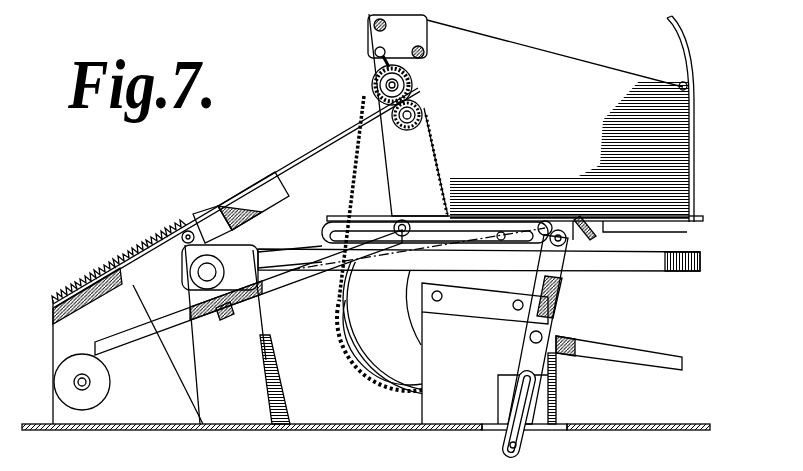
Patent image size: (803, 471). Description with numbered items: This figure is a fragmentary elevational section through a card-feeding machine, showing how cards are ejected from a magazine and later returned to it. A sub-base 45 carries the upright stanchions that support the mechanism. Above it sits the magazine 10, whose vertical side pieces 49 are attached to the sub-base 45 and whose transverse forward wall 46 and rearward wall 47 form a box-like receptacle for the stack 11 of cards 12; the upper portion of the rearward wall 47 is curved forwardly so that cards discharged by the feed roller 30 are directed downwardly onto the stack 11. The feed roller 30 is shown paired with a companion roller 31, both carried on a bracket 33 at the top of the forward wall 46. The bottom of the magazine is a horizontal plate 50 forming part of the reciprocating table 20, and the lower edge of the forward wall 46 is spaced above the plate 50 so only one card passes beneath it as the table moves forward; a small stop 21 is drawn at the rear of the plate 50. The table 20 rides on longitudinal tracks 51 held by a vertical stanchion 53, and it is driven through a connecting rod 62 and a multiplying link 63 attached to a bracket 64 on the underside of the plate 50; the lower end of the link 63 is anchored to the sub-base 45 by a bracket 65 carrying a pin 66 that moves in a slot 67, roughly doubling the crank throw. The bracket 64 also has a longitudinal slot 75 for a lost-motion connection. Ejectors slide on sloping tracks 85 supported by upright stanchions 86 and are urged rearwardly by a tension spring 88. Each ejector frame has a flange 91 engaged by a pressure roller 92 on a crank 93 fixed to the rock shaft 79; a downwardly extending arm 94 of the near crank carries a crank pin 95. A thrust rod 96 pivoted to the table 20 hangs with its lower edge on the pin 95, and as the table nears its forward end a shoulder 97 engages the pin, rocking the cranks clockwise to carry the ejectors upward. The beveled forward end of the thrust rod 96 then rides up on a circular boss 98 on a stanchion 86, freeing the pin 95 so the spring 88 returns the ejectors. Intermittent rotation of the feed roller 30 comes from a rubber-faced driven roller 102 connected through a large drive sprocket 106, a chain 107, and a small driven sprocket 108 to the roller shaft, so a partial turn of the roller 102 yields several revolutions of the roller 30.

The magazine 10 is at (694, 129).
The stack 11 is at (584, 166).
The card 12 is at (318, 148).
The reciprocating table 20 is at (416, 214).
The stop 21 is at (597, 236).
The feed roller 30 is at (412, 80).
The pressure roller 31 is at (424, 108).
The bracket 33 is at (370, 38).
The sub-base 45 is at (623, 433).
The forward wall 46 is at (440, 140).
The rearward wall 47 is at (680, 36).
The side piece 49 is at (566, 64).
The horizontal plate 50 is at (660, 222).
The longitudinal track 51 is at (676, 272).
The vertical stanchion 53 is at (211, 334).
The connecting rod 62 is at (645, 352).
The multiplying link 63 is at (562, 300).
The bracket 64 is at (533, 247).
The bracket 65 is at (550, 402).
The pin 66 is at (517, 389).
The slot 67 is at (518, 447).
The longitudinal slot 75 is at (503, 232).
The rock shaft 79 is at (192, 280).
The sloping track 85 is at (286, 198).
The upright stanchion 86 is at (107, 362).
The tension spring 88 is at (92, 282).
The flange 91 is at (192, 214).
The pressure roller 92 is at (180, 232).
The crank 93 is at (240, 244).
The downwardly extending arm 94 is at (214, 316).
The crank pin 95 is at (228, 318).
The thrust rod 96 is at (307, 287).
The shoulder 97 is at (356, 274).
The circular boss 98 is at (56, 381).
The driven roller 102 is at (424, 305).
The drive sprocket 106 is at (413, 390).
The chain 107 is at (356, 164).
The driven sprocket 108 is at (374, 76).